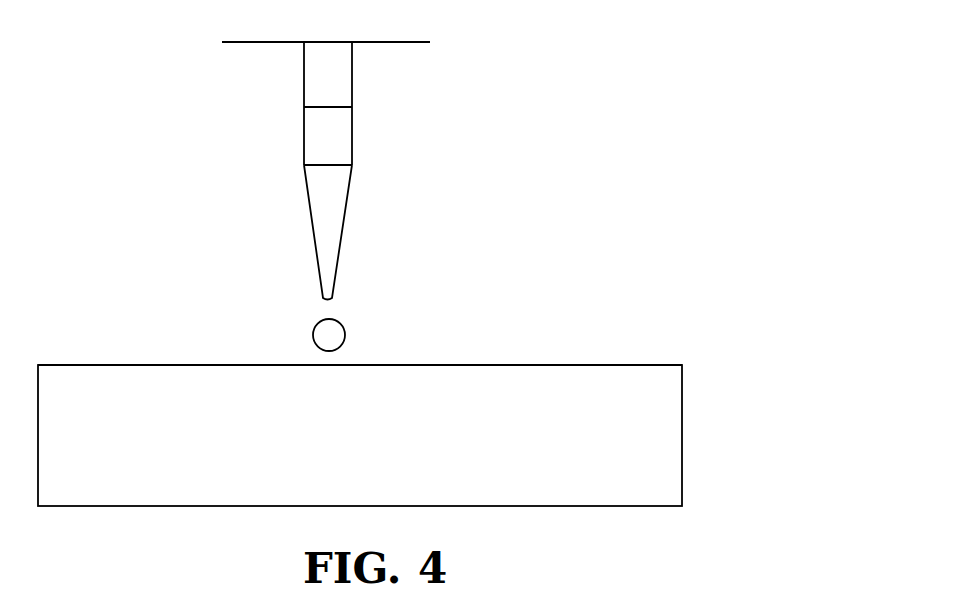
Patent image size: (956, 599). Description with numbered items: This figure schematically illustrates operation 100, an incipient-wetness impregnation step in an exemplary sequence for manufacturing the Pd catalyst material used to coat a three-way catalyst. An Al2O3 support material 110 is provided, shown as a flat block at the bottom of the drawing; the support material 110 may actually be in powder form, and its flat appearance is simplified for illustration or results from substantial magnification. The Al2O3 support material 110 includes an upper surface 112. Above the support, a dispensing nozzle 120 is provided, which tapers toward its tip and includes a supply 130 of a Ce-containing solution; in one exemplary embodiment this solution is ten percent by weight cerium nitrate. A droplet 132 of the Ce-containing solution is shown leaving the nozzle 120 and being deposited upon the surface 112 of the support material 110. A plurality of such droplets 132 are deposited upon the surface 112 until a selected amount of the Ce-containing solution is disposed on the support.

The operation 100 is at (615, 121).
The Al2O3 support material 110 is at (650, 432).
The surface 112 is at (605, 365).
The dispensing nozzle 120 is at (302, 128).
The supply of Ce-containing solution 130 is at (337, 147).
The droplet 132 is at (338, 337).